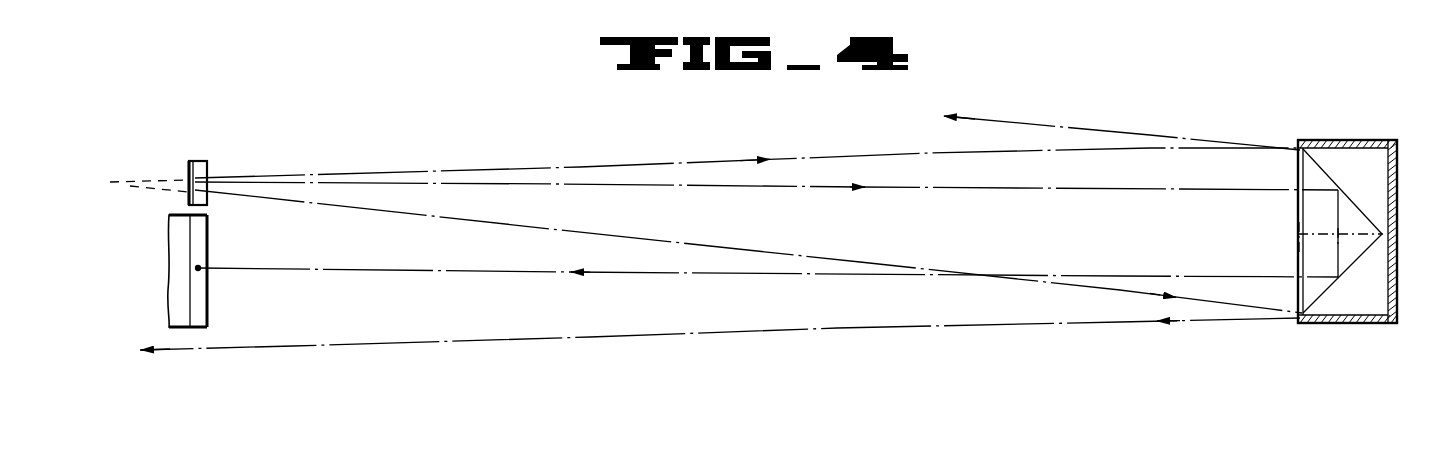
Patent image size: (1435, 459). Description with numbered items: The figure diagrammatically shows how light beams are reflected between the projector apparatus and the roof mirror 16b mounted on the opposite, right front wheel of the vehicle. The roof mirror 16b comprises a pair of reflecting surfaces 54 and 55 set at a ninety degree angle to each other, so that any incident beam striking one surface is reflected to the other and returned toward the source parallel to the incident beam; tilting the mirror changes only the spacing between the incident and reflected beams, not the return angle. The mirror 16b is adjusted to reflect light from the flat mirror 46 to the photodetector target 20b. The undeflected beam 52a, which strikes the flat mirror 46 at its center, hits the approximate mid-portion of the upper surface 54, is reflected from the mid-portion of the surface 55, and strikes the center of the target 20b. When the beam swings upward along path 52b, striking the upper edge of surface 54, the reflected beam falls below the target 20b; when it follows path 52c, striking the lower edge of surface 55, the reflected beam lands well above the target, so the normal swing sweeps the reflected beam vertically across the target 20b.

The roof mirror 16b is at (1367, 139).
The photodetector target 20b is at (203, 307).
The flat mirror 46 is at (201, 161).
The undeflected beam 52a is at (1223, 191).
The upward beam path 52b is at (662, 163).
The downward beam path 52c is at (664, 240).
The upper reflecting surface 54 is at (1313, 165).
The lower reflecting surface 55 is at (1315, 298).